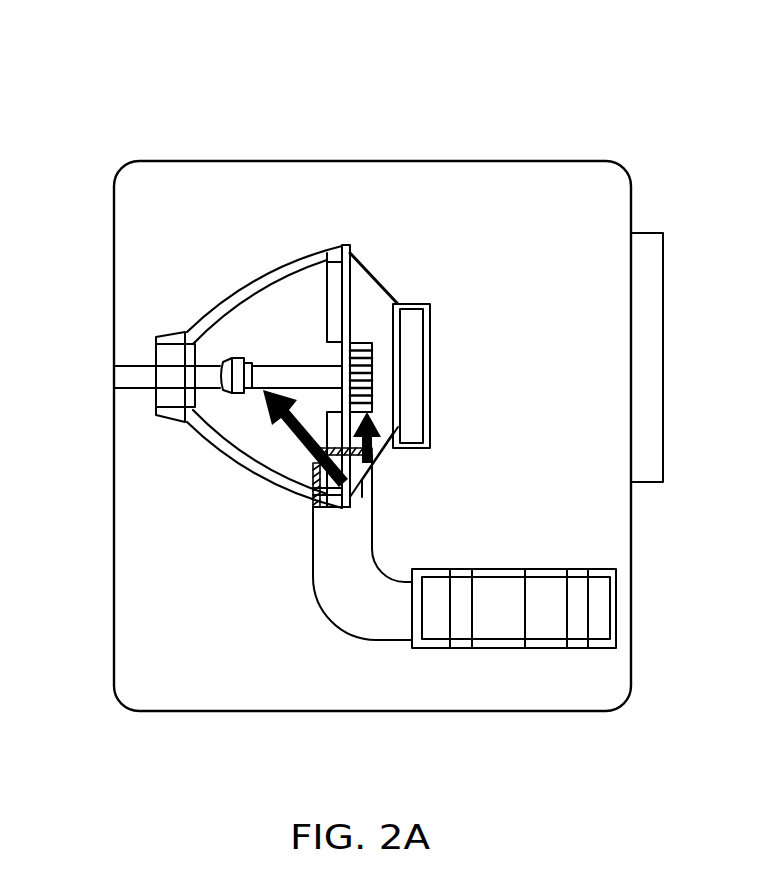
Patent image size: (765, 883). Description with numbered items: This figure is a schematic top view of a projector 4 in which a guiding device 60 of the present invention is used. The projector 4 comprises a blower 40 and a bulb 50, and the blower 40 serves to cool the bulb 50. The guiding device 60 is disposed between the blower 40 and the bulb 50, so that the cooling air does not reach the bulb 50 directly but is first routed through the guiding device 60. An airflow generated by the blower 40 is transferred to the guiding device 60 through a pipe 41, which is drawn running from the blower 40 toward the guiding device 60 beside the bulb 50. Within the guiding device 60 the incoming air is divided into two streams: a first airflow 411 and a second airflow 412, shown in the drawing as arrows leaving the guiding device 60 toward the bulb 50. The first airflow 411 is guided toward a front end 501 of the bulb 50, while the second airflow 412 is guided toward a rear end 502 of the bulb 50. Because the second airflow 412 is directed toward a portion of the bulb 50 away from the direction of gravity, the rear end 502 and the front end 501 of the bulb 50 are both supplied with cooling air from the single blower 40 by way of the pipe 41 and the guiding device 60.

The projector 4 is at (356, 42).
The bulb 50 is at (267, 357).
The front end 501 is at (360, 367).
The rear end 502 is at (207, 372).
The first airflow 411 is at (375, 438).
The second airflow 412 is at (293, 436).
The guiding device 60 is at (318, 483).
The pipe 41 is at (357, 620).
The blower 40 is at (488, 633).